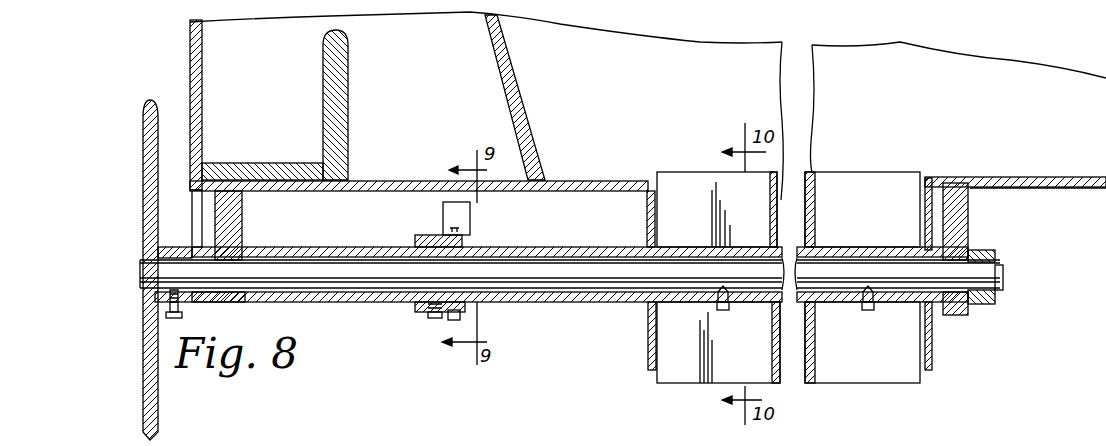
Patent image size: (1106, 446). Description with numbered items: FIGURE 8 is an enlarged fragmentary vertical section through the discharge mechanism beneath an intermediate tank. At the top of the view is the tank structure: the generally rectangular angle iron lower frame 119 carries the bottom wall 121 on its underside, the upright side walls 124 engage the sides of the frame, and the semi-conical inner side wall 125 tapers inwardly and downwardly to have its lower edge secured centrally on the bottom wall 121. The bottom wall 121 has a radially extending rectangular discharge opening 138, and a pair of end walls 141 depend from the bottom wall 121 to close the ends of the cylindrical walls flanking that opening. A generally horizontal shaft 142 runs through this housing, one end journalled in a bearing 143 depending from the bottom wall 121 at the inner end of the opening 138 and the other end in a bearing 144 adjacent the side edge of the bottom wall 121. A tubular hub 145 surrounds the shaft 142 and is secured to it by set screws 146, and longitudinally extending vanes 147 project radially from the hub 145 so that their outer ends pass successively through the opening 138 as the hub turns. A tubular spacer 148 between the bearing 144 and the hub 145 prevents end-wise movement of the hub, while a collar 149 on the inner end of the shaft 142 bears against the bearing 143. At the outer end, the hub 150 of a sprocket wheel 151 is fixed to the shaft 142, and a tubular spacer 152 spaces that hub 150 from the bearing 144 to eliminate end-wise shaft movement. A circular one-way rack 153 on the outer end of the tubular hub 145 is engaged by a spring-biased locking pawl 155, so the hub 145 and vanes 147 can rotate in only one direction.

The lower frame 119 is at (323, 112).
The bottom wall 121 is at (1022, 178).
The side walls 124 is at (203, 72).
The semi-conical inner side wall 125 is at (516, 110).
The discharge opening 138 is at (930, 178).
The end walls 141 is at (650, 352).
The horizontal shaft 142 is at (572, 290).
The bearing 143 is at (969, 222).
The bearing 144 is at (243, 222).
The tubular hub 145 is at (562, 248).
The set screws 146 is at (722, 308).
The vanes 147 is at (876, 174).
The tubular spacer 148 is at (348, 247).
The collar 149 is at (998, 255).
The hub 150 is at (172, 247).
The sprocket wheel 151 is at (143, 180).
The tubular spacer 152 is at (205, 302).
The one-way rack 153 is at (416, 320).
The locking pawl 155 is at (471, 212).